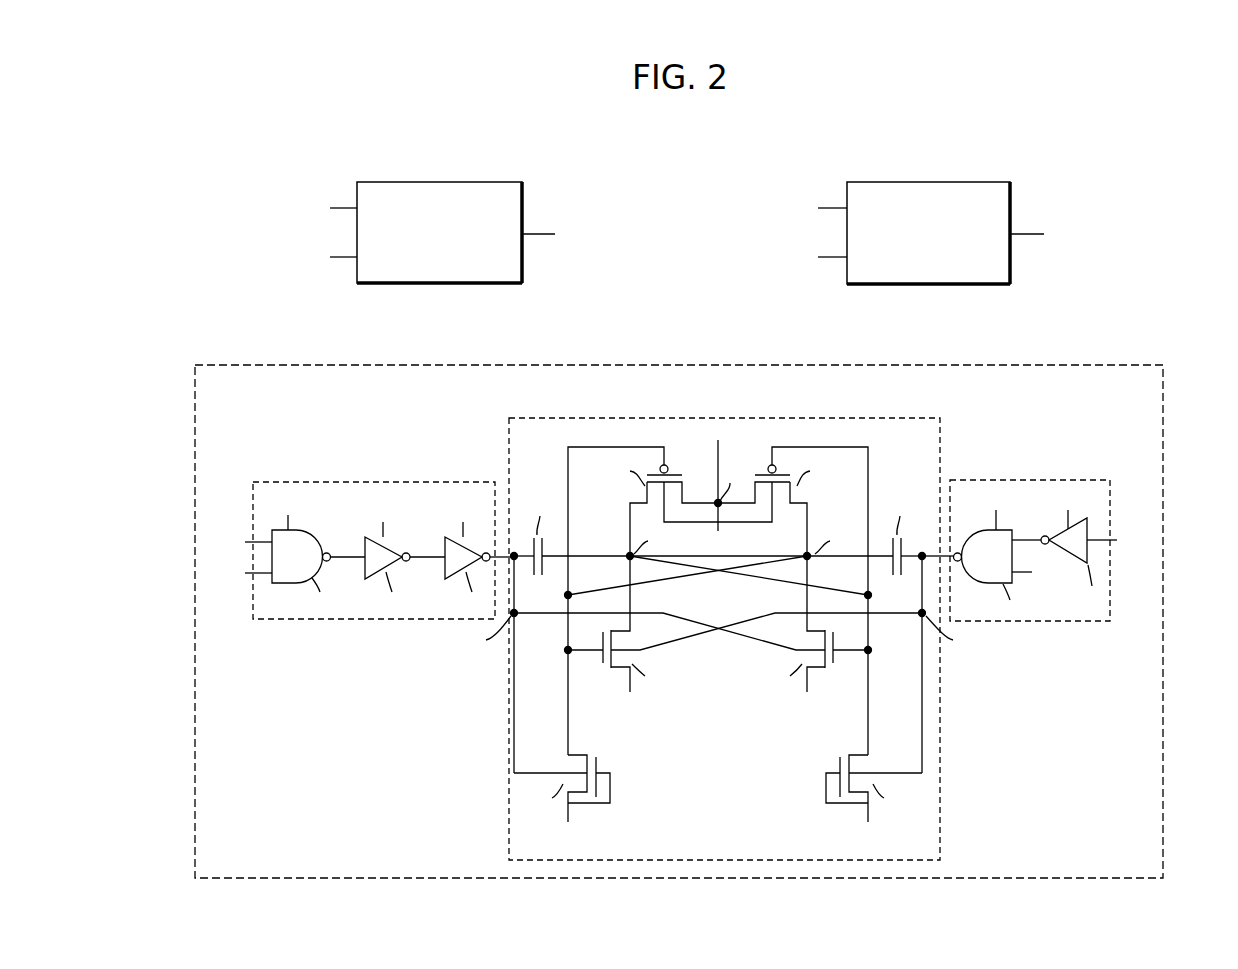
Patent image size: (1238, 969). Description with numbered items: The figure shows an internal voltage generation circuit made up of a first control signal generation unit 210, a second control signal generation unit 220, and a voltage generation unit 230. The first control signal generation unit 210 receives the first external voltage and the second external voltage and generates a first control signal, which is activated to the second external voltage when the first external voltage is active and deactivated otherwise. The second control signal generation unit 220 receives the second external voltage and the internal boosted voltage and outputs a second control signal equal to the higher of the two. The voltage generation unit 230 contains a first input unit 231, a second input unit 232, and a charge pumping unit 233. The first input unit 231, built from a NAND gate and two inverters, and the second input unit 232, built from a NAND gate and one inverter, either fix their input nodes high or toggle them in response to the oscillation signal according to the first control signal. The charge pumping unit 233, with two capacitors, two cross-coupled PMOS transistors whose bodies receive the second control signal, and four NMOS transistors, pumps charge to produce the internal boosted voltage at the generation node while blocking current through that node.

The first control signal generation unit 210 is at (441, 182).
The second control signal generation unit 220 is at (928, 182).
The voltage generation unit 230 is at (778, 365).
The first input unit 231 is at (385, 482).
The second input unit 232 is at (1028, 480).
The charge pumping unit 233 is at (723, 418).